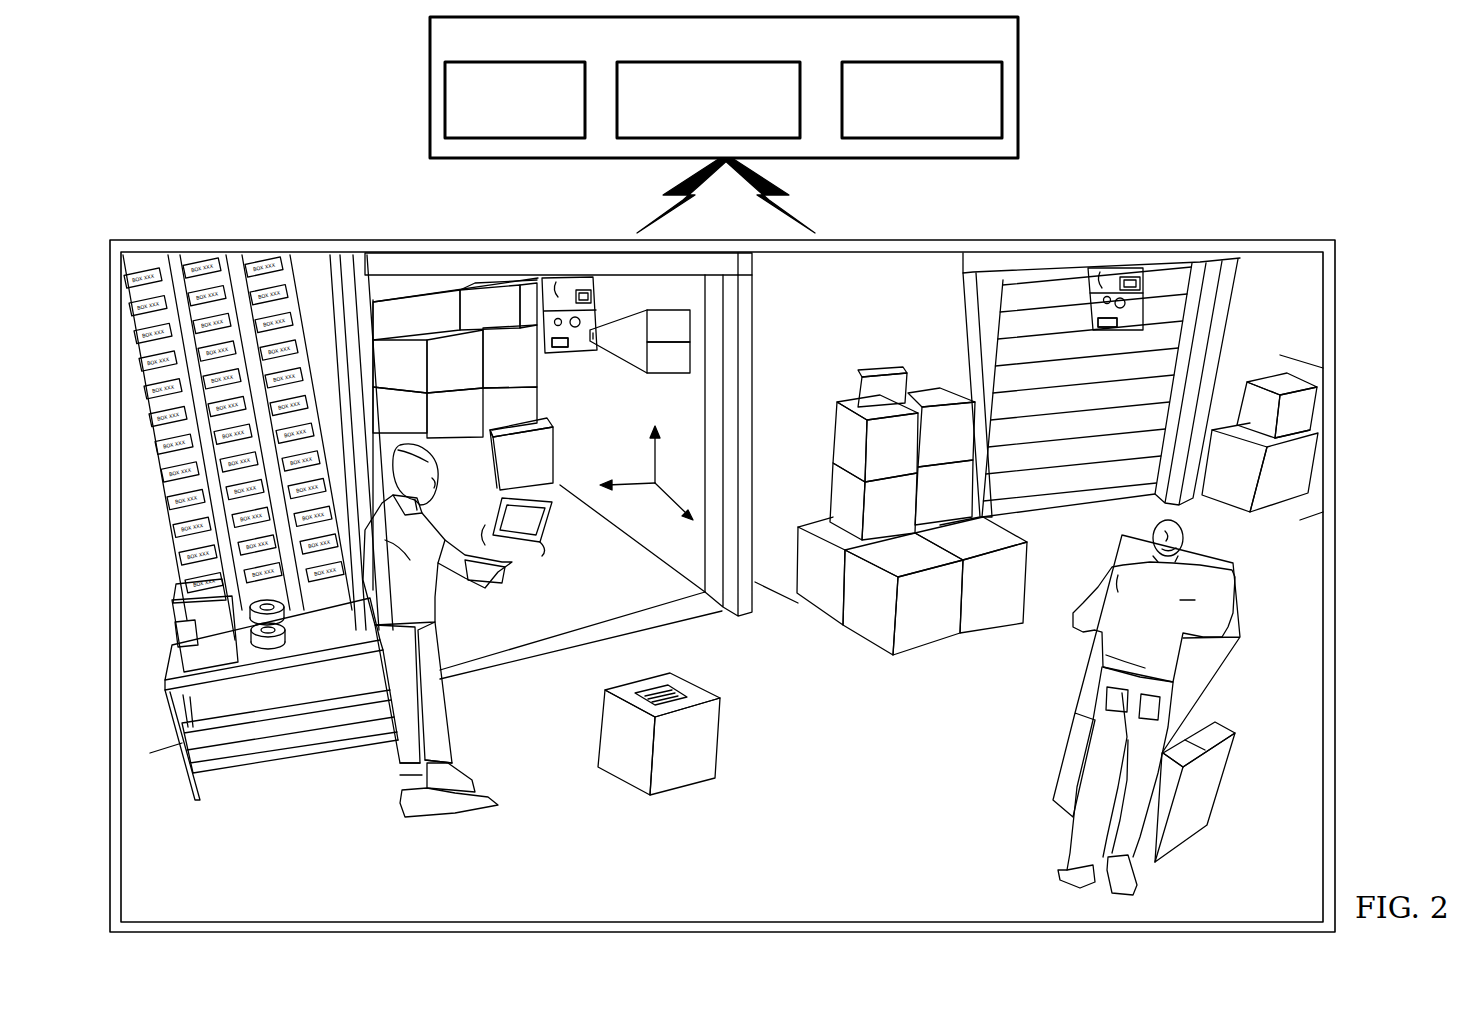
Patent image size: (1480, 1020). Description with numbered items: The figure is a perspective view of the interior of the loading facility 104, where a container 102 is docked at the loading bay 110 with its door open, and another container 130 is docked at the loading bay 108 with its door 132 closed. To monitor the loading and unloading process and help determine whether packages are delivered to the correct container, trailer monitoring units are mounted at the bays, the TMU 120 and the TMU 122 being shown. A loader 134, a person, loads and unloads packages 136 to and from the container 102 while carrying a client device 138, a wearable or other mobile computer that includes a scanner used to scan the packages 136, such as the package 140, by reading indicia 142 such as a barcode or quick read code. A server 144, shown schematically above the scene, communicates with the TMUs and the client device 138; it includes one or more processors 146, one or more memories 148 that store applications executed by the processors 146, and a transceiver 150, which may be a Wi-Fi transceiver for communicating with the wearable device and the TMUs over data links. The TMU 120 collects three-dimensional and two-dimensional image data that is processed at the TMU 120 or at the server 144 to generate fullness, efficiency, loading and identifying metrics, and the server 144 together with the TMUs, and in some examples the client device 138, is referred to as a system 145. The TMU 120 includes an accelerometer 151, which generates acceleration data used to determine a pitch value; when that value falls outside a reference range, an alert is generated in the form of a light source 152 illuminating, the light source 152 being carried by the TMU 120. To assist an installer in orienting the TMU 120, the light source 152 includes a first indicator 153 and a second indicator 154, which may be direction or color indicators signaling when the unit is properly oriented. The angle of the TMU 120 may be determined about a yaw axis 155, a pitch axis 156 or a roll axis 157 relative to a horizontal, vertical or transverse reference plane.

The container 102 is at (687, 543).
The loading facility 104 is at (897, 275).
The loading bay 108 is at (1210, 262).
The loading bay 110 is at (483, 273).
The TMU 120 is at (553, 279).
The TMU 122 is at (1108, 268).
The container 130 is at (1030, 270).
The door 132 is at (1172, 333).
The loader 134 is at (398, 758).
The packages 136 is at (848, 654).
The client device 138 is at (500, 587).
The package 140 is at (669, 736).
The indicia 142 is at (673, 687).
The server 144 is at (429, 56).
The system 145 is at (152, 176).
The processors 146 is at (444, 100).
The memories 148 is at (635, 138).
The transceiver 150 is at (923, 140).
The accelerometer 151 is at (557, 347).
The light source 152 is at (703, 366).
The first indicator 153 is at (682, 325).
The second indicator 154 is at (682, 360).
The yaw axis 155 is at (660, 453).
The pitch axis 156 is at (640, 480).
The roll axis 157 is at (667, 493).